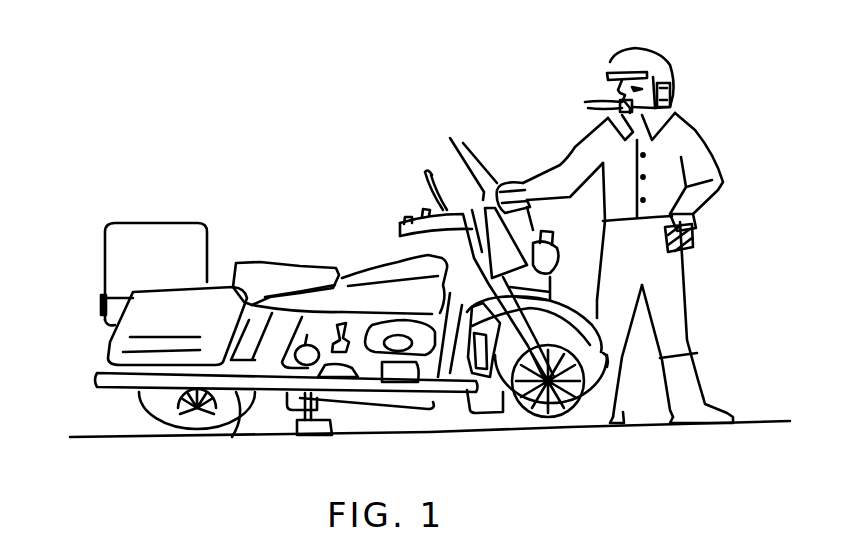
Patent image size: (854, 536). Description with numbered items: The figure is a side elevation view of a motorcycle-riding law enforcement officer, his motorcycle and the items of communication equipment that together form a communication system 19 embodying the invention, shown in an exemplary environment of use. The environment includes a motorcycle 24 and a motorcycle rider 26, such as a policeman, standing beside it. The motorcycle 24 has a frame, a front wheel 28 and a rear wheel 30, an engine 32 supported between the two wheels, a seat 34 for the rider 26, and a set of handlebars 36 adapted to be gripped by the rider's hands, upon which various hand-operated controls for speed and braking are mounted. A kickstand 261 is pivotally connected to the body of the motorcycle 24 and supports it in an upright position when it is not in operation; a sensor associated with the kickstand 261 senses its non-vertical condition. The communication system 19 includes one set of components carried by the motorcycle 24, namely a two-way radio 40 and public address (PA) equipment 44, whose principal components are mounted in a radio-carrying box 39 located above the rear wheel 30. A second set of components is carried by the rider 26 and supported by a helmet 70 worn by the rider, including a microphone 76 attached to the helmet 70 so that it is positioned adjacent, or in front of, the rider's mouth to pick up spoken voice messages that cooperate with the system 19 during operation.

The communication system 19 is at (654, 214).
The motorcycle 24 is at (313, 263).
The motorcycle rider 26 is at (692, 337).
The kickstand 261 is at (303, 413).
The front wheel 28 is at (547, 423).
The rear wheel 30 is at (143, 410).
The engine 32 is at (387, 393).
The seat 34 is at (257, 257).
The handlebars 36 is at (400, 229).
The radio-carrying box 39 is at (100, 313).
The two-way radio 40 is at (100, 290).
The public address (PA) system 44 is at (629, 463).
The helmet 70 is at (645, 48).
The microphone 76 is at (585, 103).